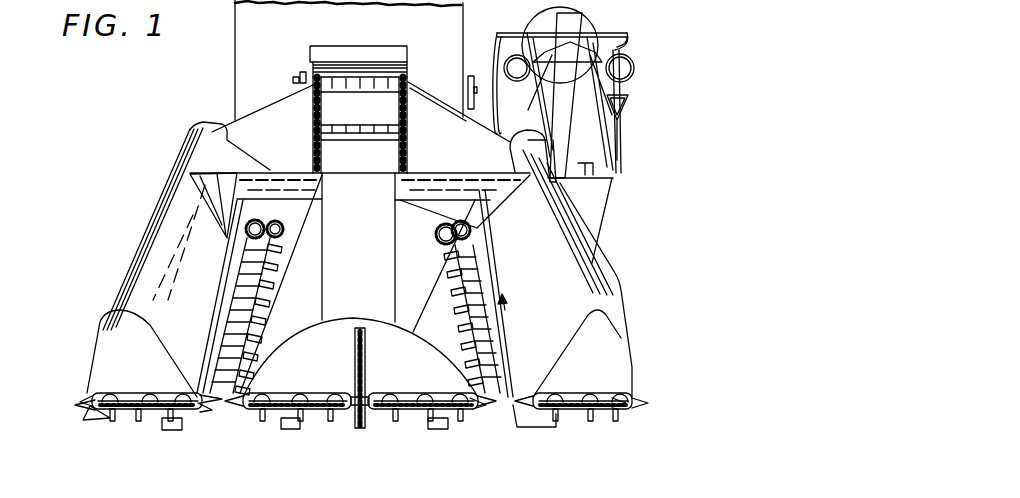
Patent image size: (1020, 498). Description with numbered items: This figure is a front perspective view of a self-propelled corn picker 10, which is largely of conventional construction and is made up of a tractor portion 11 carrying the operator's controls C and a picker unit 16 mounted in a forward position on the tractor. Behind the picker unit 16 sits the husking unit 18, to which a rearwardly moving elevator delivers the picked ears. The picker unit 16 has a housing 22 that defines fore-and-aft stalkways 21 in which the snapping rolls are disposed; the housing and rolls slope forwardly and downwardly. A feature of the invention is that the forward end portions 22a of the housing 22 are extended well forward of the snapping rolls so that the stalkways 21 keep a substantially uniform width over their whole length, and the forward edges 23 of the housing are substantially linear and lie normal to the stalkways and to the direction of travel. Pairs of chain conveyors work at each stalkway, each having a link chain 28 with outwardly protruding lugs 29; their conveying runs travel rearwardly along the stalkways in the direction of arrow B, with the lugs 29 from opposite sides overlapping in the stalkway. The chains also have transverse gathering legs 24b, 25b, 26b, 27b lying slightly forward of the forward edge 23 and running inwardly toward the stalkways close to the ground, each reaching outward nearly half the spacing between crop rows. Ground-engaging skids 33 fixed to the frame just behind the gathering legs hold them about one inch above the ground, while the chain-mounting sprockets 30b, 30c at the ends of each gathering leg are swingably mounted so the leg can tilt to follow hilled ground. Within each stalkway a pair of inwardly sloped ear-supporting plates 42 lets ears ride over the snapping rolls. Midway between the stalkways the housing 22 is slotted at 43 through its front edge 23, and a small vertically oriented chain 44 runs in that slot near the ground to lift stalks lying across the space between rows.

The self-propelled corn picker 10 is at (617, 212).
The tractor portion 11 is at (619, 138).
The controls C is at (597, 26).
The picker unit 16 is at (602, 299).
The husking unit 18 is at (234, 50).
The stalkways 21 is at (238, 349).
The housing 22 is at (195, 287).
The forward end portions of the housing 22a is at (115, 343).
The forward edges of the housing 23 is at (150, 396).
The gathering leg of chain conveyor 24b is at (153, 420).
The gathering leg of chain conveyor 25b is at (302, 413).
The gathering leg of chain conveyor 26b is at (420, 417).
The gathering leg of chain conveyor 27b is at (589, 413).
The link chain 28 is at (107, 418).
The lugs 29 is at (77, 405).
The chain-mounting sprocket 30b is at (97, 396).
The chain-mounting sprocket 30c is at (200, 408).
The ground-engaging skids 33 is at (287, 427).
The ear-supporting plates 42 is at (225, 378).
The slot 43 is at (353, 353).
The small chain 44 is at (369, 375).
The arrow B is at (505, 310).